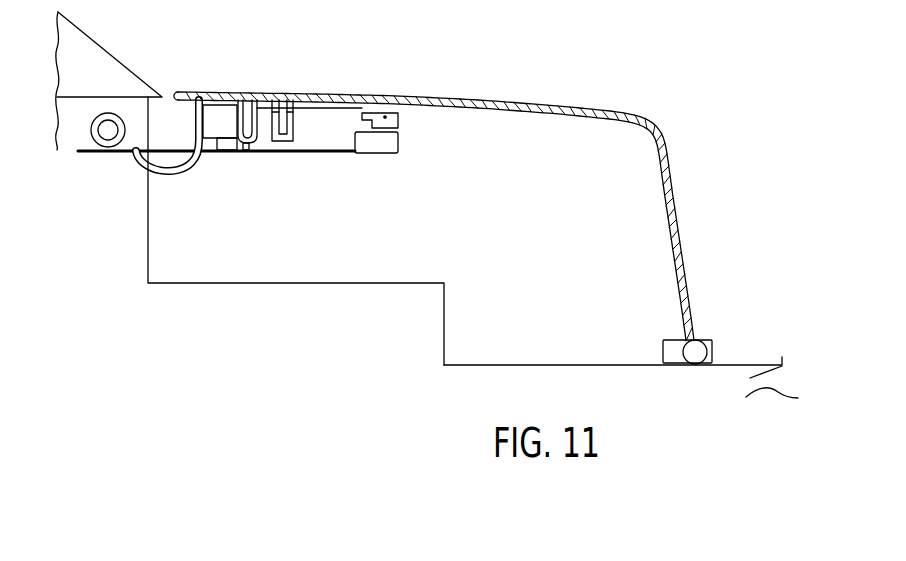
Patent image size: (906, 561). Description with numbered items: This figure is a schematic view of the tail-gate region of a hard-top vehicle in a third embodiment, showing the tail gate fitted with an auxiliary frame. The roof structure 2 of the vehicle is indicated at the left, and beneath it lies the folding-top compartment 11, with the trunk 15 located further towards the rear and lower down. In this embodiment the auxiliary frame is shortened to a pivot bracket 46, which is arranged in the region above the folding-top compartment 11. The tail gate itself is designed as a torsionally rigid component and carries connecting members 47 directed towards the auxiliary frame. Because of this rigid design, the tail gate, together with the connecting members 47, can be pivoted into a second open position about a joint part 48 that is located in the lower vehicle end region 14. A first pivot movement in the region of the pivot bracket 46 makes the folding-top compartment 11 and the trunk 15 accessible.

The roof structure 2 is at (116, 56).
The folding-top compartment 11 is at (383, 257).
The lower vehicle end region 14 is at (785, 390).
The trunk 15 is at (566, 336).
The pivot bracket 46 is at (203, 173).
The connecting members 47 is at (387, 120).
The joint part 48 is at (711, 343).